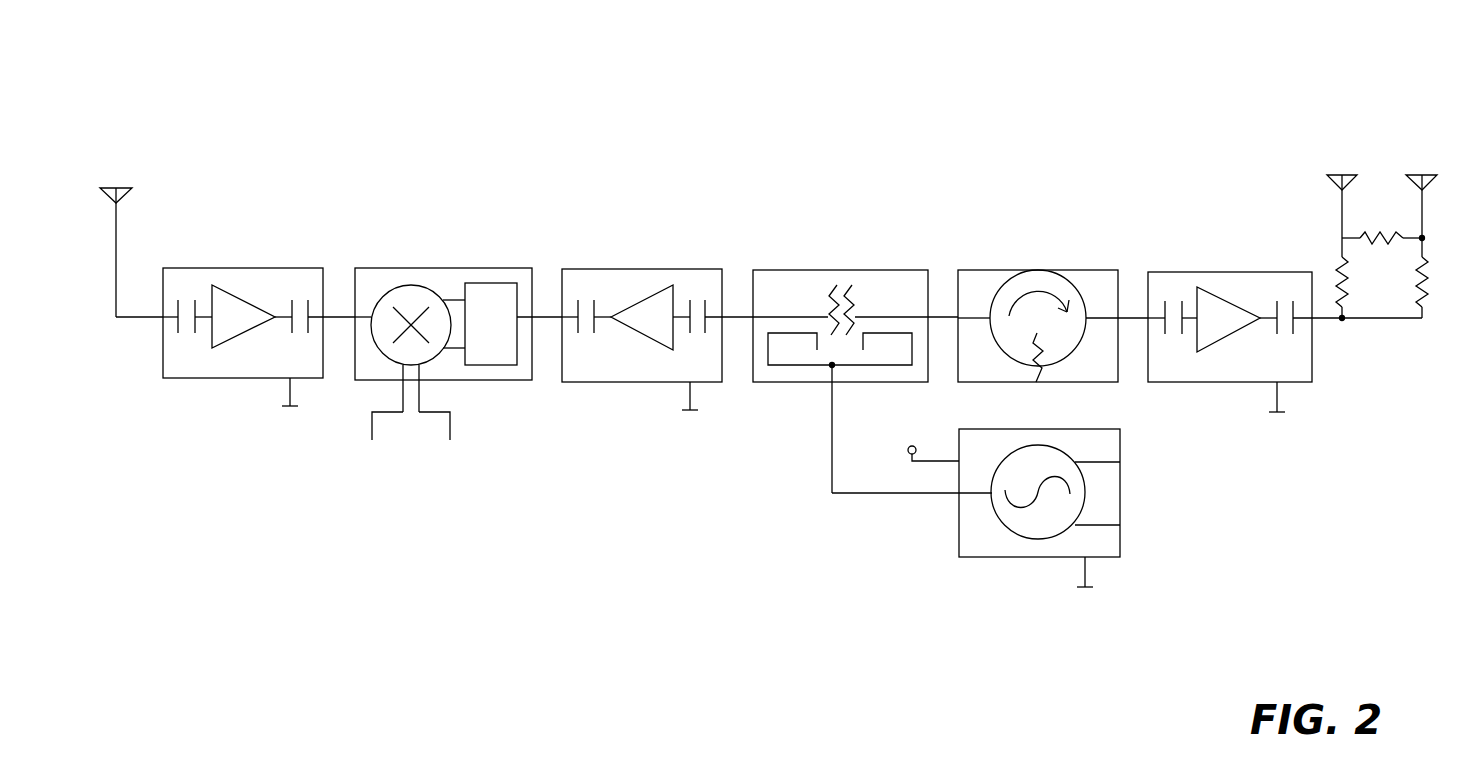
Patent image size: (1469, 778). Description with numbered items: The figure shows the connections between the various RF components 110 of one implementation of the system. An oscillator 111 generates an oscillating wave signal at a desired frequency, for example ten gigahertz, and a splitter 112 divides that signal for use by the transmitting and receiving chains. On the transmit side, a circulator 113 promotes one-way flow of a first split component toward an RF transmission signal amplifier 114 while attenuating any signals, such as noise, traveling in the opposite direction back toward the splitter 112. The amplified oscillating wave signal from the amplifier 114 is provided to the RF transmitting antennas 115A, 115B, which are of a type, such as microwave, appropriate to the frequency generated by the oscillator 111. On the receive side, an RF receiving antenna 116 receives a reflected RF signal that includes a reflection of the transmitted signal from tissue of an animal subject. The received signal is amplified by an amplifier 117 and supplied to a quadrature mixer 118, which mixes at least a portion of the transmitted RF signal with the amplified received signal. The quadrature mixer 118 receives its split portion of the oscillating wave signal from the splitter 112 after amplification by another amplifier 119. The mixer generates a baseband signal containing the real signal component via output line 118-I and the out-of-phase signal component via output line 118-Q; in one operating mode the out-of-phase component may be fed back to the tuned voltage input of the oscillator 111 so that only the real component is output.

The RF components 110 is at (1175, 96).
The oscillator 111 is at (1000, 557).
The splitter 112 is at (800, 270).
The circulator 113 is at (975, 270).
The RF transmission signal amplifier 114 is at (1228, 272).
The RF transmitting antenna 115A is at (1328, 178).
The RF transmitting antenna 115B is at (1438, 178).
The RF receiving antenna 116 is at (127, 190).
The amplifier 117 is at (263, 268).
The quadrature mixer 118 is at (449, 347).
The output line 118-I is at (370, 421).
The output line 118-Q is at (453, 419).
The amplifier 119 is at (625, 269).